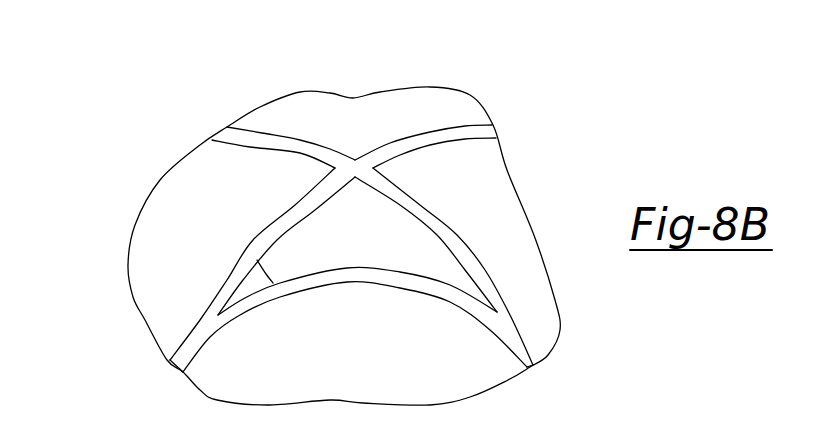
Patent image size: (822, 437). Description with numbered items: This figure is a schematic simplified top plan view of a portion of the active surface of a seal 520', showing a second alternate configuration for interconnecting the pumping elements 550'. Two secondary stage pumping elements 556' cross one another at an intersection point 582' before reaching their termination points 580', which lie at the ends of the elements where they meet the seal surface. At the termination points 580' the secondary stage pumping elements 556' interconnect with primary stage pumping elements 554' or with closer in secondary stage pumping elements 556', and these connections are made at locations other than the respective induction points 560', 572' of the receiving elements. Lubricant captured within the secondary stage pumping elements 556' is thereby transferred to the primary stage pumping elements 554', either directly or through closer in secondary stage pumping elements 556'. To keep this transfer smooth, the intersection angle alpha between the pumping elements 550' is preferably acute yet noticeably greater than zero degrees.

The shoe upper 520' is at (299, 214).
The pumping elements 550' is at (357, 202).
The secondary stage pumping elements 556' is at (270, 218).
The primary stage pumping elements 554' is at (270, 276).
The intersection point 582' is at (444, 209).
The induction point 560' is at (355, 295).
The induction point 572' is at (355, 319).
The termination points 580' is at (357, 329).